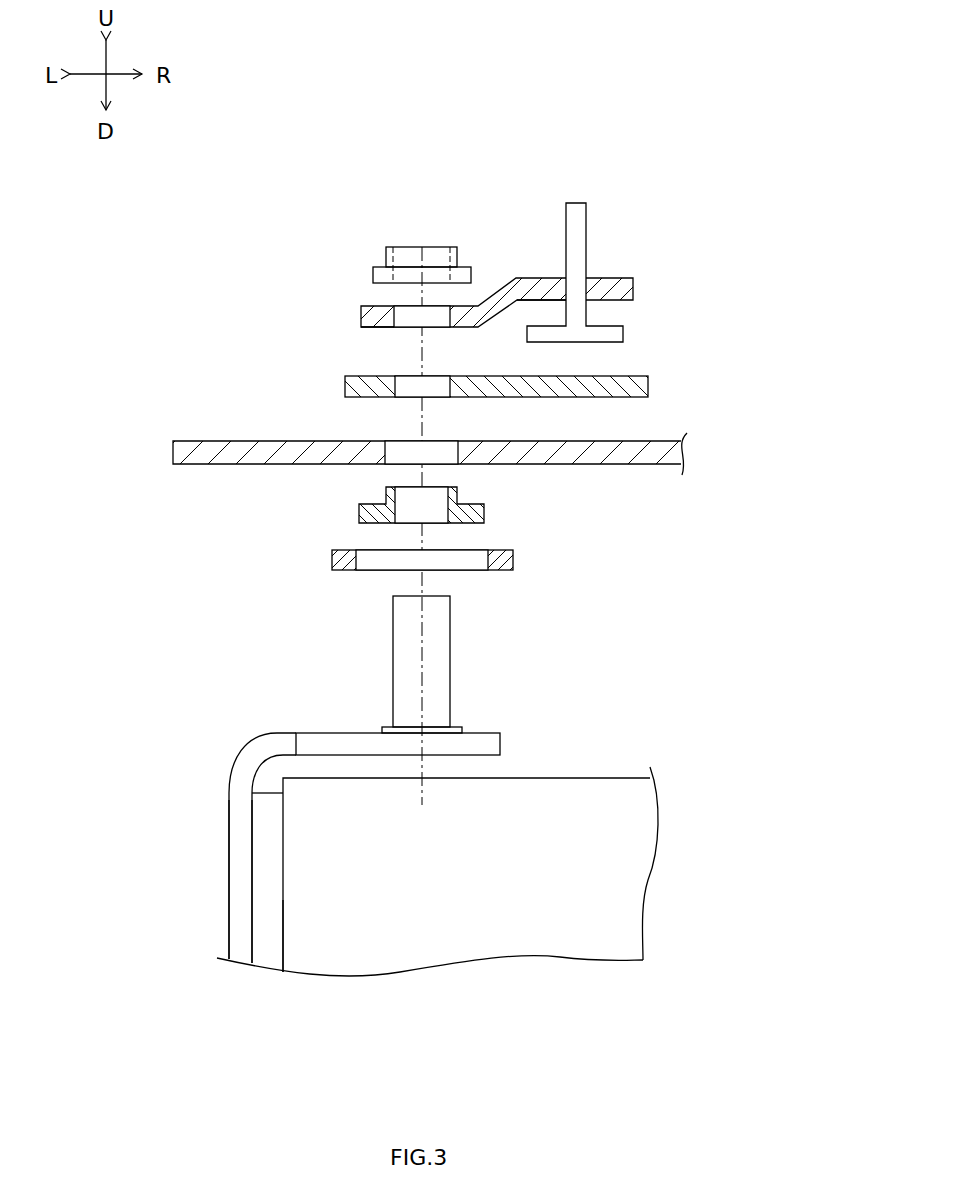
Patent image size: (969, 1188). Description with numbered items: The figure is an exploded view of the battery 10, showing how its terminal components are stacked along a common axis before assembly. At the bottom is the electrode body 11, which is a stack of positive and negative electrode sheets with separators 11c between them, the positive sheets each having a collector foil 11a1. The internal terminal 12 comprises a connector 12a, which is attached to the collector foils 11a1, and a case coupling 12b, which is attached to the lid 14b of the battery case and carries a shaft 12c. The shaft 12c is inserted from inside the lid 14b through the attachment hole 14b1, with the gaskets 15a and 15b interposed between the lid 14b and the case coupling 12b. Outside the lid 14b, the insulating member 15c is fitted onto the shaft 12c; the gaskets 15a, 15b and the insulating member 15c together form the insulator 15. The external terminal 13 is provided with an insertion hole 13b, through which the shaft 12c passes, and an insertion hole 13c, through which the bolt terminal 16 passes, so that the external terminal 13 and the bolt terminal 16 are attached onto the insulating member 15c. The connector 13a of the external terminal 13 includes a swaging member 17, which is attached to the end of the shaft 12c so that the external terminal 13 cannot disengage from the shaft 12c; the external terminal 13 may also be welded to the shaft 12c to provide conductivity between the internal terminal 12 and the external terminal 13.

The battery 10 is at (197, 266).
The electrode body 11 is at (340, 963).
The collector foil 11a1 is at (263, 937).
The separator 11c is at (282, 952).
The internal terminal 12 is at (224, 741).
The connector 12a is at (228, 848).
The case coupling 12b is at (487, 732).
The shaft 12c is at (450, 652).
The external terminal 13 is at (620, 279).
The connector 13a is at (362, 243).
The insertion hole 13b is at (397, 327).
The insertion hole 13c is at (590, 277).
The lid 14b is at (213, 441).
The attachment hole 14b1 is at (387, 443).
The insulator 15 is at (270, 547).
The gasket 15a is at (513, 560).
The gasket 15b is at (484, 513).
The insulating member 15c is at (648, 388).
The bolt terminal 16 is at (576, 203).
The swaging member 17 is at (457, 265).